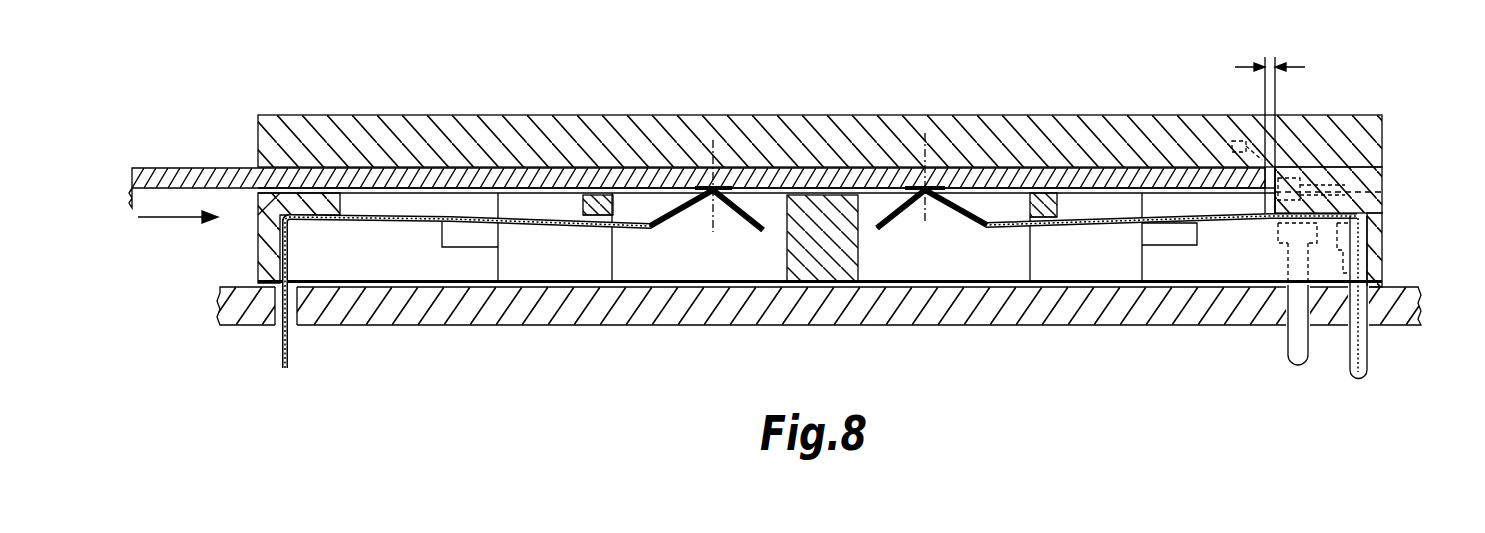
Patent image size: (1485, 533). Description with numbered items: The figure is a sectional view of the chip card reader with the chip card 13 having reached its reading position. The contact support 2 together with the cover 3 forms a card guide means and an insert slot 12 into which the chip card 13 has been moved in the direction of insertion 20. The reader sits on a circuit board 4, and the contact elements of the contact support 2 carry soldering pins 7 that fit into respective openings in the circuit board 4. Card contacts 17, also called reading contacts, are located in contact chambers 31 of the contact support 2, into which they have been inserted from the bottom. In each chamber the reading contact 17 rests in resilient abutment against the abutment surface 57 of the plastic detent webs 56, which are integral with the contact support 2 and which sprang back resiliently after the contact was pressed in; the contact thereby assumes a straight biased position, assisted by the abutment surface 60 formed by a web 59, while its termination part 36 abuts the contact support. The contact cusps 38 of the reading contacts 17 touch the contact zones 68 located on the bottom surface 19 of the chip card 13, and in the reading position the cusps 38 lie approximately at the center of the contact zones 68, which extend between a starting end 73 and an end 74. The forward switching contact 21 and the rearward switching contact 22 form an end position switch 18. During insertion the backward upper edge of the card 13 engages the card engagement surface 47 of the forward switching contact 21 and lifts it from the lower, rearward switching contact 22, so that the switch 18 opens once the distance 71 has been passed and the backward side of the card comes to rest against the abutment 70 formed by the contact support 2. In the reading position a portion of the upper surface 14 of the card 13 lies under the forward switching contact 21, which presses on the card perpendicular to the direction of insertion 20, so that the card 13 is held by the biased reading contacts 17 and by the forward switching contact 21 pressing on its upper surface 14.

The contact support 2 is at (257, 253).
The cover 3 is at (482, 140).
The circuit board 4 is at (487, 300).
The soldering pins 7 is at (278, 355).
The insert slot 12 is at (513, 175).
The chip card 13 is at (180, 186).
The upper surface of the card 14 is at (768, 190).
The card contacts 17 is at (348, 221).
The end position switch 18 is at (1333, 158).
The bottom surface of the chip card 19 is at (767, 193).
The direction of insertion 20 is at (157, 222).
The forward switching contact 21 is at (1288, 350).
The rearward switching contact 22 is at (1376, 367).
The contact chambers 31 is at (383, 262).
The termination part 36 is at (278, 335).
The contact cusps 38 is at (707, 195).
The card engagement surface 47 is at (1207, 137).
The detent webs 56 is at (458, 240).
The abutment surface 57 is at (465, 215).
The web 59 is at (598, 200).
The abutment surface 60 is at (593, 225).
The contact zones 68 is at (711, 188).
The abutment 70 is at (1270, 200).
The distance 71 is at (1268, 57).
The starting end of the contact zones 73 is at (967, 175).
The end of the contact zones 74 is at (892, 180).